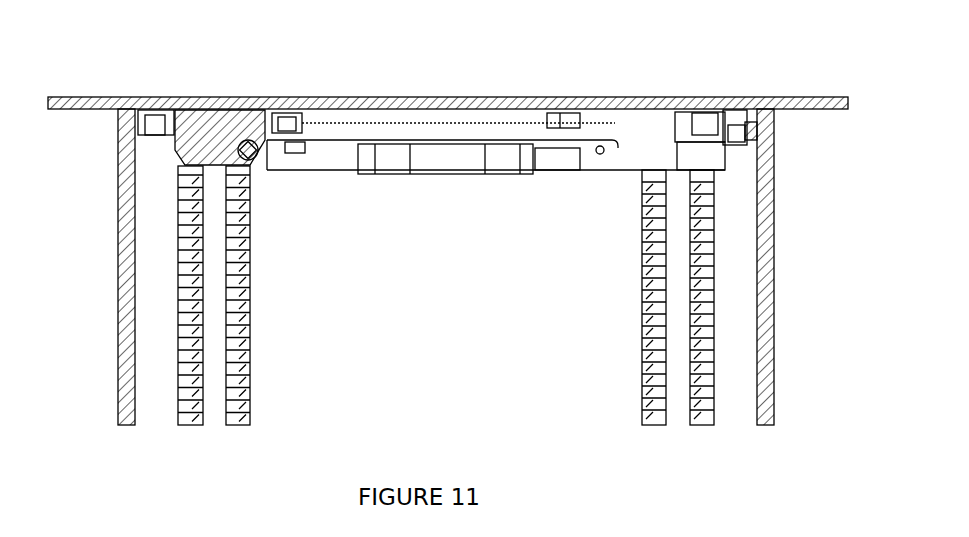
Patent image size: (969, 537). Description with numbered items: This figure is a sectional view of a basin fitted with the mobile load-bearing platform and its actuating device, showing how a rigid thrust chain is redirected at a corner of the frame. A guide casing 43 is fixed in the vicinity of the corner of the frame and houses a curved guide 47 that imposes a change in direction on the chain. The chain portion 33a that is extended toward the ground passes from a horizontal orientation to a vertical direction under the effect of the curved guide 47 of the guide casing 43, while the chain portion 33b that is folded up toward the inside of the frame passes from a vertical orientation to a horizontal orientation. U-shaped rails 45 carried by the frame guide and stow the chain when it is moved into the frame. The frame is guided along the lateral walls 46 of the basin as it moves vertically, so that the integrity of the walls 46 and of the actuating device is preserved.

The guide member 43 is at (240, 128).
The chain portion 33b is at (282, 127).
The U-shaped rails 45 is at (438, 133).
The curved guide 47 is at (225, 120).
The lateral walls 46 is at (770, 168).
The chain portion 33a is at (707, 255).